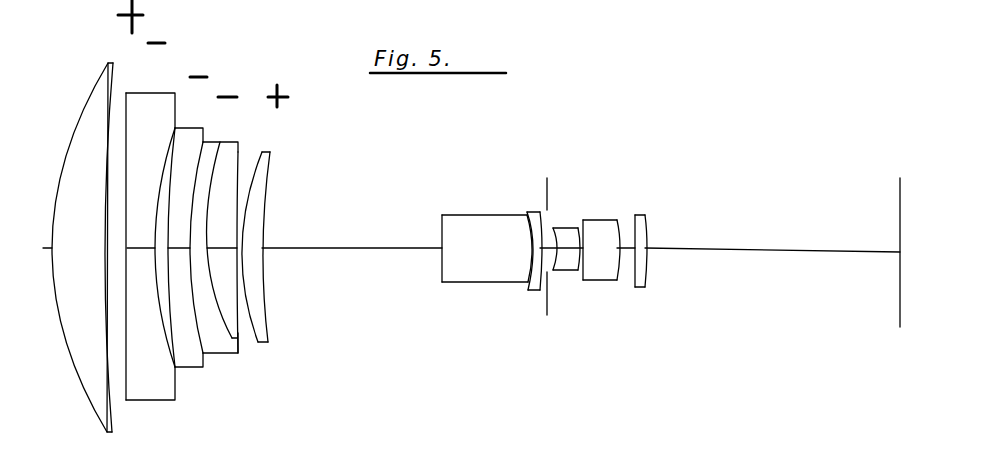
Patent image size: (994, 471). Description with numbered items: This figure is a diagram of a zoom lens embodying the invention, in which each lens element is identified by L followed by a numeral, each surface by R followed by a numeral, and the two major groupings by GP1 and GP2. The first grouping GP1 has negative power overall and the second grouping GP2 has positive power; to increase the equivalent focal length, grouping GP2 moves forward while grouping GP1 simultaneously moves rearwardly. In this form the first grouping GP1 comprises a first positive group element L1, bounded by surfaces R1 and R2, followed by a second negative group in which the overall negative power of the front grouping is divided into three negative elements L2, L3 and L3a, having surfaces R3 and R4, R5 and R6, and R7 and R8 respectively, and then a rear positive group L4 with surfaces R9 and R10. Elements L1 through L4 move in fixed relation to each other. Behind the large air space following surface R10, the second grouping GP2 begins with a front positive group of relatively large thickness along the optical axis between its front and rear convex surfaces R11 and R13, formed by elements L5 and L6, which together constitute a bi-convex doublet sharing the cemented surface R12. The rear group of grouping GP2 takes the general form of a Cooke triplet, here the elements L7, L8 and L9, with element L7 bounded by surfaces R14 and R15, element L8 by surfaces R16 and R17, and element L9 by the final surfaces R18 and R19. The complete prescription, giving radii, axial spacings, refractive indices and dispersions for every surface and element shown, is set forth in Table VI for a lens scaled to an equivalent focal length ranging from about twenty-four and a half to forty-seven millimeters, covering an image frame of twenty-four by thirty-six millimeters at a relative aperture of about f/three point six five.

The first positive group element L1 is at (108, 67).
The negative element L2 is at (142, 106).
The negative element L3 is at (188, 132).
The negative element L3a is at (220, 143).
The rear positive group L4 is at (267, 157).
The front positive group element L5 is at (462, 222).
The front positive group element L6 is at (532, 210).
The rear group element L7 is at (568, 227).
The rear group element L8 is at (603, 232).
The rear group element L9 is at (645, 223).
The surface R1 is at (88, 402).
The surface R2 is at (110, 425).
The surface R3 is at (126, 388).
The surface R4 is at (150, 334).
The surface R5 is at (178, 345).
The surface R6 is at (213, 357).
The surface R7 is at (243, 345).
The surface R8 is at (200, 313).
The surface R9 is at (220, 308).
The surface R10 is at (263, 265).
The surface R11 is at (442, 263).
The surface R12 is at (528, 267).
The surface R13 is at (538, 284).
The surface R14 is at (552, 273).
The surface R15 is at (571, 271).
The surface R16 is at (618, 279).
The surface R17 is at (585, 262).
The surface R18 is at (647, 266).
The surface R19 is at (646, 239).
The first grouping GP1 is at (241, 393).
The second grouping GP2 is at (573, 346).